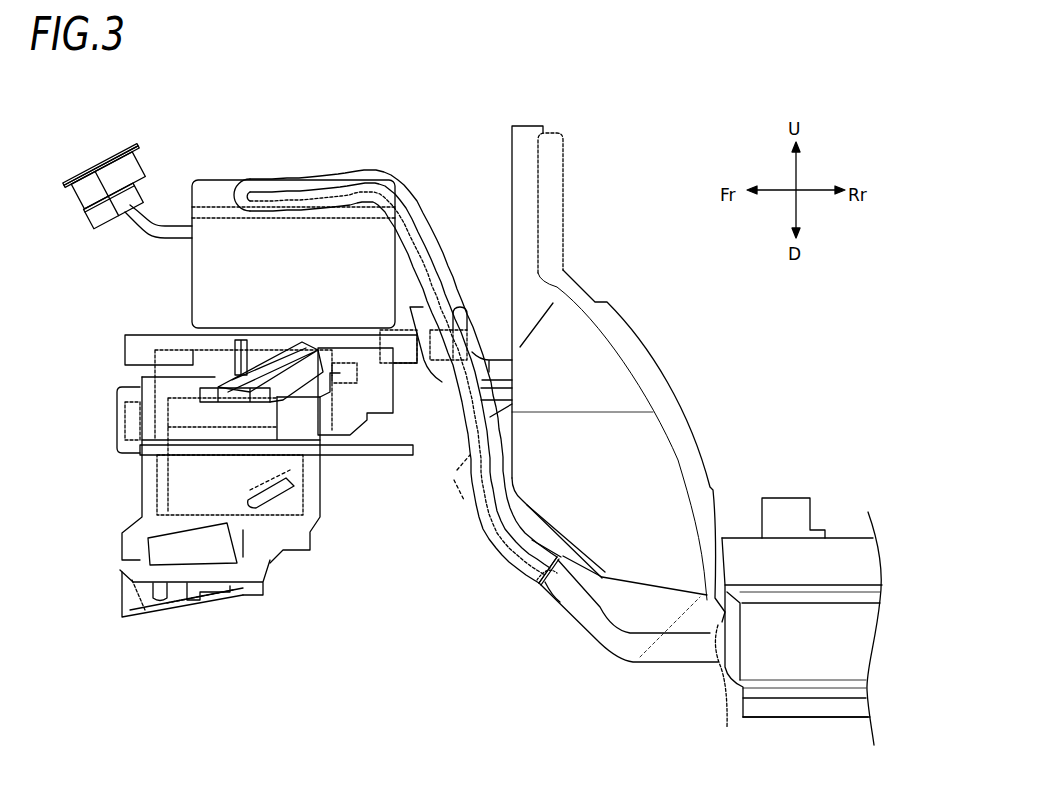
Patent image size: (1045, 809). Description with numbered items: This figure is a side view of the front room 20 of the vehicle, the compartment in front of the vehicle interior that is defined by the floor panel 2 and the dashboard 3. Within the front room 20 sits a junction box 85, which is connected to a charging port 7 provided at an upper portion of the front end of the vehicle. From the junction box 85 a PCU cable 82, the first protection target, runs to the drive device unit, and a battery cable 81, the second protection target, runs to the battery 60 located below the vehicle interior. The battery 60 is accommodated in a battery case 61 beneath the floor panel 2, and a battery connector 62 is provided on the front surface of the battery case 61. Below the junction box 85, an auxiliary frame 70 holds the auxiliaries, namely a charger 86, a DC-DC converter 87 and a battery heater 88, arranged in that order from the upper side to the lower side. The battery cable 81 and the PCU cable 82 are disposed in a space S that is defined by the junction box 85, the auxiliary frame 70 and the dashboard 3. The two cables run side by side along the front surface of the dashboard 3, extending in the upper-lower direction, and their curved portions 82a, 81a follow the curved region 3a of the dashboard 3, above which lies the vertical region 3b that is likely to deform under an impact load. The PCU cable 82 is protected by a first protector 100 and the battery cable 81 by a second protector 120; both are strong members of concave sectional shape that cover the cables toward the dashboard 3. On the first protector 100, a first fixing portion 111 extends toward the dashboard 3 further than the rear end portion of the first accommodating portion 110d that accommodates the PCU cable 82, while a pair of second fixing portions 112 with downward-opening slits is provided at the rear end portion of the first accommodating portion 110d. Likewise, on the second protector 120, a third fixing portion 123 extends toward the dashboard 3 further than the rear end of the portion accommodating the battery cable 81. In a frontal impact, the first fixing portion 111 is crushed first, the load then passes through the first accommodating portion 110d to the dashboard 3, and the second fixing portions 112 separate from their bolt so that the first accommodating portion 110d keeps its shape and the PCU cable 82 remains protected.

The floor panel 2 is at (843, 537).
The dashboard 3 is at (511, 157).
The curved region 3a is at (515, 492).
The vertical region 3b is at (513, 327).
The charging port 7 is at (110, 142).
The front room 20 is at (416, 148).
The battery 60 is at (877, 632).
The battery case 61 is at (843, 718).
The battery connector 62 is at (717, 672).
The auxiliary frame 70 is at (321, 515).
The battery cable 81 is at (368, 196).
The PCU cable 82 is at (348, 172).
The curved portion 81a is at (487, 540).
The curved portion 82a is at (490, 600).
The junction box 85 is at (370, 243).
The charger 86 is at (385, 392).
The DC-DC converter 87 is at (285, 476).
The battery heater 88 is at (210, 551).
The first protector 100 is at (433, 330).
The first accommodating portion 110d is at (557, 578).
The first fixing portion 111 is at (500, 406).
The second fixing portion 112 is at (552, 546).
The second protector 120 is at (475, 438).
The third fixing portion 123 is at (503, 372).
The space S is at (460, 492).